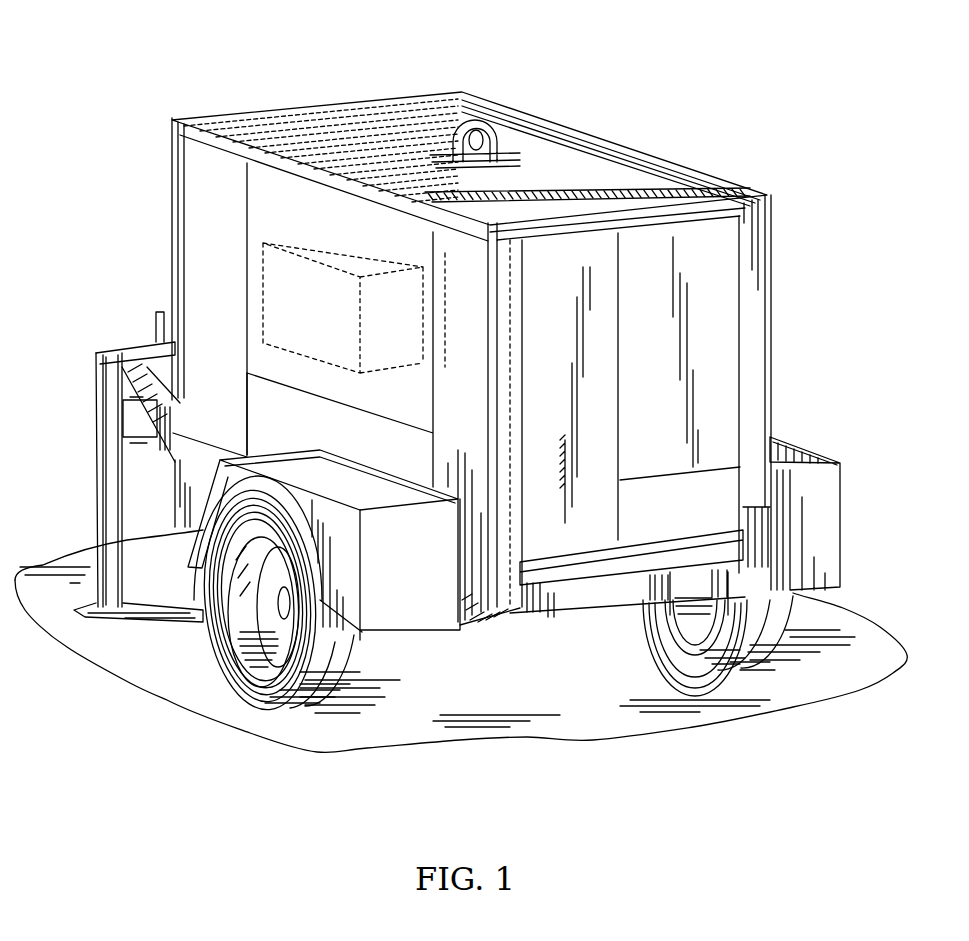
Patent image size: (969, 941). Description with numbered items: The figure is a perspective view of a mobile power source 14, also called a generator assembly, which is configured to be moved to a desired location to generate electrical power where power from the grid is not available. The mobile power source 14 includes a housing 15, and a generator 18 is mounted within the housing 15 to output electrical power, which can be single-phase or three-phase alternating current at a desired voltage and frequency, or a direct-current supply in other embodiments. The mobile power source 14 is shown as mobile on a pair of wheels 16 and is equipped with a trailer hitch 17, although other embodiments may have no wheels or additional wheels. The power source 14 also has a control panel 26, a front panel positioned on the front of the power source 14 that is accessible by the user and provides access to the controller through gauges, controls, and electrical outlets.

The mobile power source 14 is at (231, 70).
The housing 15 is at (578, 160).
The wheels 16 is at (207, 673).
The trailer hitch 17 is at (133, 337).
The generator 18 is at (302, 235).
The control panel 26 is at (557, 537).